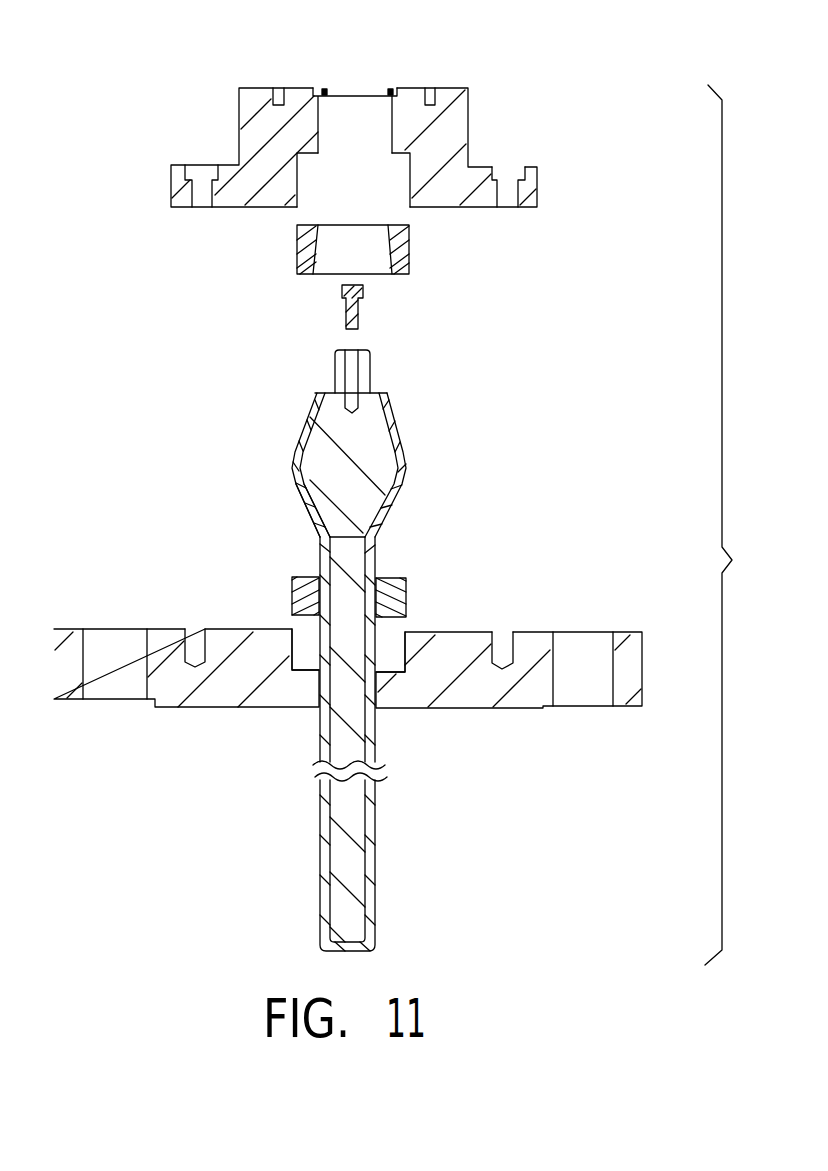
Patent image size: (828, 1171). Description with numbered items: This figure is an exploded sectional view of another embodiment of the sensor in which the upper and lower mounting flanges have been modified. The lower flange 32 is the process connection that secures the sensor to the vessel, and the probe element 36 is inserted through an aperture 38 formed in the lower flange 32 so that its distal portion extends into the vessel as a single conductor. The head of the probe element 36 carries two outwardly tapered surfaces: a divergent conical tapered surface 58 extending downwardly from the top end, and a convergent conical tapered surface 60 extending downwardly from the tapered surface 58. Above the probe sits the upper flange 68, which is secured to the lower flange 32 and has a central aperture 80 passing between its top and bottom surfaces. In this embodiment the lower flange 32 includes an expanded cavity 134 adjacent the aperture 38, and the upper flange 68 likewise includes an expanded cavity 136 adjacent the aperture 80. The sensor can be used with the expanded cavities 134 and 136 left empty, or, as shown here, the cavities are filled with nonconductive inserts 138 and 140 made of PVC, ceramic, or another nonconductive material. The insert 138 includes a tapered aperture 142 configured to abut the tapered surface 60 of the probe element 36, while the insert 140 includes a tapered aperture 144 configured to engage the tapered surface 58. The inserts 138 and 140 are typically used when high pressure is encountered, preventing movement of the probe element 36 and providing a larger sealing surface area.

The lower flange 32 is at (623, 617).
The probe element 36 is at (417, 420).
The aperture 38 is at (381, 692).
The tapered surface 58 is at (320, 415).
The tapered surface 60 is at (312, 491).
The upper flange 68 is at (570, 158).
The central aperture 80 is at (391, 120).
The expanded cavity 134 is at (404, 645).
The expanded cavity 136 is at (412, 183).
The insert 138 is at (293, 580).
The insert 140 is at (297, 257).
The tapered aperture 142 is at (385, 575).
The tapered aperture 144 is at (390, 260).